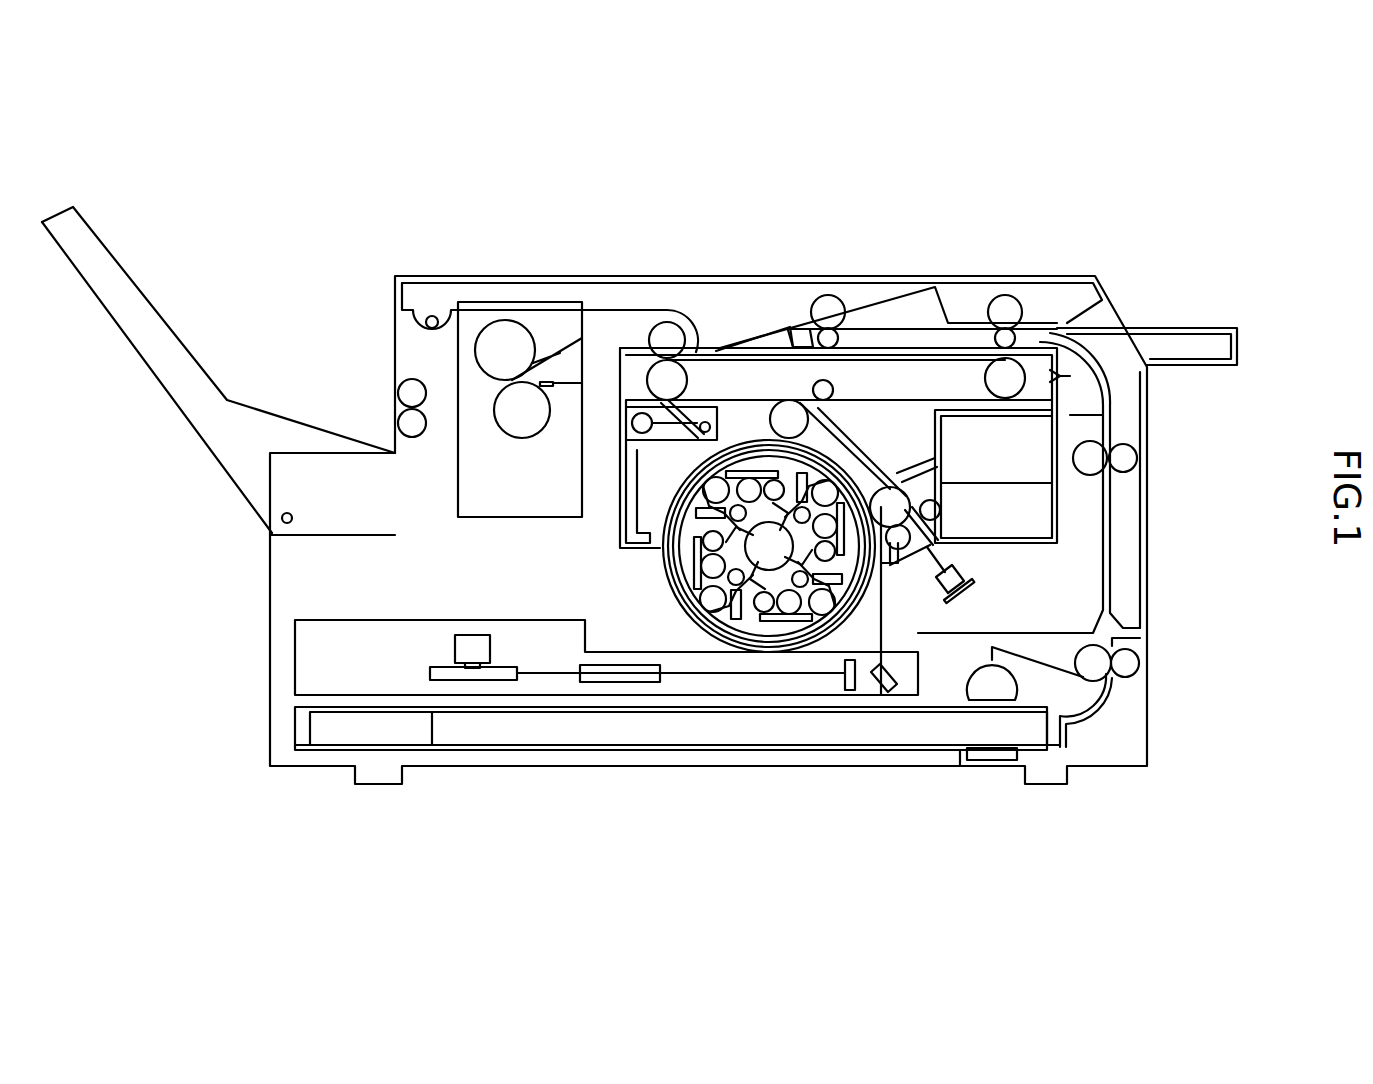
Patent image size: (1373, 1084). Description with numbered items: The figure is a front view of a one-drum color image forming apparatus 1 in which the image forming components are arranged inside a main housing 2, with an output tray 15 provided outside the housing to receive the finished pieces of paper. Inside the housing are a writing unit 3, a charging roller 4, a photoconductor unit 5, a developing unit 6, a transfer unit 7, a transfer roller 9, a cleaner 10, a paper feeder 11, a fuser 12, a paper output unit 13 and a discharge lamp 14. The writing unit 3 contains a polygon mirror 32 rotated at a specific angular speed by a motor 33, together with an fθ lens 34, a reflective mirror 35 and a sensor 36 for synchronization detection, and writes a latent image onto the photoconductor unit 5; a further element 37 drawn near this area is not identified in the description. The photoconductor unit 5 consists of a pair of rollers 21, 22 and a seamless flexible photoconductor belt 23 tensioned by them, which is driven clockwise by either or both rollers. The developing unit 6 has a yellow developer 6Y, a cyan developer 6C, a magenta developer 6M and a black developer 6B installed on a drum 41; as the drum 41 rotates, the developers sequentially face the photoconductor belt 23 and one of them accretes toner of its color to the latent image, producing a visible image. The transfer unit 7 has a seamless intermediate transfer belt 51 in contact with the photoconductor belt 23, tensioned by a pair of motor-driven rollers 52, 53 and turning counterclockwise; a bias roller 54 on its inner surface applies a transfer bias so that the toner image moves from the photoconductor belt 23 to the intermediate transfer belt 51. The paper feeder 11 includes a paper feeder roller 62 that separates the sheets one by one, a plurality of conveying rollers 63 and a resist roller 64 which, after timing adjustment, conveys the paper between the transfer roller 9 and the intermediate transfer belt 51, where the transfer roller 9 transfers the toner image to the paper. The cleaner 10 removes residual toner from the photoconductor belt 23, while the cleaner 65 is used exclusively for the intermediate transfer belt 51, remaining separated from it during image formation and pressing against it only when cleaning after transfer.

The color image forming apparatus 1 is at (1158, 255).
The main housing 2 is at (268, 598).
The writing unit 3 is at (685, 700).
The charging roller 4 is at (902, 567).
The photoconductor unit 5 is at (843, 446).
The developing unit 6 is at (667, 588).
The black developer 6B is at (775, 474).
The cyan developer 6C is at (672, 562).
The magenta developer 6M is at (747, 622).
The yellow developer 6Y is at (881, 631).
The transfer unit 7 is at (1028, 387).
The transfer roller 9 is at (666, 320).
The cleaner 10 is at (938, 523).
The paper feeder 11 is at (930, 748).
The fuser 12 is at (493, 307).
The paper output unit 13 is at (414, 445).
The discharge lamp 14 is at (972, 587).
The output tray 15 is at (173, 337).
The roller 21 is at (897, 490).
The roller 22 is at (789, 410).
The photoconductor belt 23 is at (856, 466).
The polygon mirror 32 is at (428, 673).
The motor 33 is at (470, 635).
The fθ lens 34 is at (616, 683).
The reflective mirror 35 is at (877, 692).
The sensor 36 is at (845, 683).
The board housing 37 is at (881, 631).
The drum 41 is at (680, 610).
The intermediate transfer belt 51 is at (723, 392).
The roller 52 is at (647, 368).
The roller 53 is at (1008, 392).
The bias roller 54 is at (835, 391).
The paper feeder roller 62 is at (1017, 688).
The conveying rollers 63 is at (1005, 295).
The resist roller 64 is at (828, 295).
The cleaner 65 is at (678, 431).